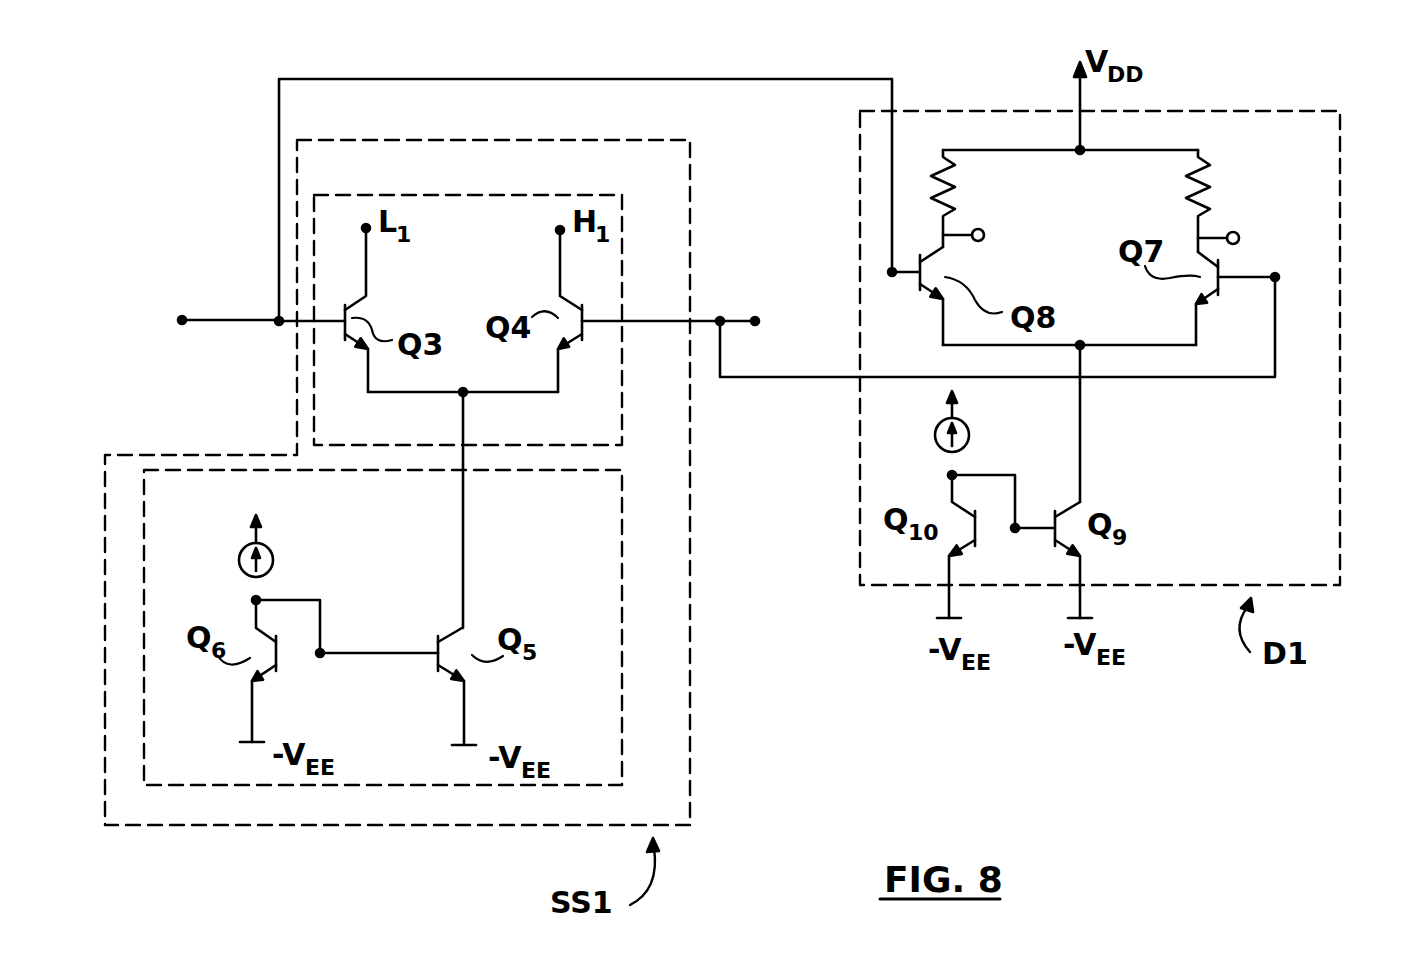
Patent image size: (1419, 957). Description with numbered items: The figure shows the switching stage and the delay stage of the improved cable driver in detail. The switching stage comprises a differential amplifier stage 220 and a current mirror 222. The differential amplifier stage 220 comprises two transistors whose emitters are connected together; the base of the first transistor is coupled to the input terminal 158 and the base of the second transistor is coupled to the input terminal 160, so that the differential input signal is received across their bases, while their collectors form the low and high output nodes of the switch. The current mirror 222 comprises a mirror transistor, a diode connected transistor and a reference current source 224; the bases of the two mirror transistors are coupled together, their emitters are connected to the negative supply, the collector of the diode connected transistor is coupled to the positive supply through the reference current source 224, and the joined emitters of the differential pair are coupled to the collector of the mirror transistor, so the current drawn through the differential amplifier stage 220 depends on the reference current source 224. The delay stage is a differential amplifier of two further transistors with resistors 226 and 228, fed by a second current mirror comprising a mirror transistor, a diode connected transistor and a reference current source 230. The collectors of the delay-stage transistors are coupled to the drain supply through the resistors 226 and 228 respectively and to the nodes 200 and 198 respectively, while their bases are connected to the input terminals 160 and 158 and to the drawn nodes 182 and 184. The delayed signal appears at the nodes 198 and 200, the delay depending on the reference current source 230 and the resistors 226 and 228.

The input terminal 158 is at (180, 312).
The input terminal 160 is at (757, 318).
The input node of differential stage 182 is at (892, 280).
The output node of differential stage 184 is at (1280, 274).
The node 198 is at (1022, 246).
The node 200 is at (1290, 240).
The differential amplifier stage 220 is at (600, 196).
The current mirror 222 is at (625, 565).
The reference current source 224 is at (276, 555).
The resistor 226 is at (1208, 196).
The resistor 228 is at (945, 190).
The reference current source 230 is at (972, 435).